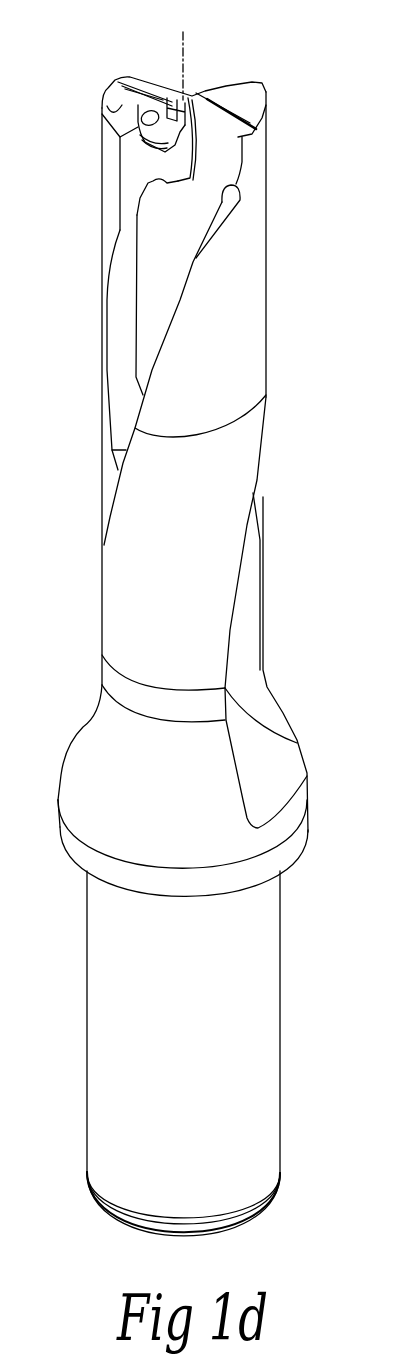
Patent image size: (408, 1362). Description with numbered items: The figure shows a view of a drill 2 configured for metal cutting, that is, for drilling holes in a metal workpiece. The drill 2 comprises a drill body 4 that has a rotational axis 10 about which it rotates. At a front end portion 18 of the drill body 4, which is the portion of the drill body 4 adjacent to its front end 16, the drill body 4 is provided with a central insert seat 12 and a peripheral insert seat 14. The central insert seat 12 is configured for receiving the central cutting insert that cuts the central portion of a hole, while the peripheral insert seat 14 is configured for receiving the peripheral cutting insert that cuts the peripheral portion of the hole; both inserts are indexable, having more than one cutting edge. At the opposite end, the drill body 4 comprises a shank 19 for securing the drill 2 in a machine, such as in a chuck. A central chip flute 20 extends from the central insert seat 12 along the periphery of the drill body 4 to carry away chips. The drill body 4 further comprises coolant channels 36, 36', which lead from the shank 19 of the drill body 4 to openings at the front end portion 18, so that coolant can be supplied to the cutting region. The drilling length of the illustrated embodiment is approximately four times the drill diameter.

The drill 2 is at (203, 618).
The drill body 4 is at (128, 559).
The rotational axis 10 is at (183, 50).
The central insert seat 12 is at (142, 160).
The peripheral insert seat 14 is at (231, 72).
The front end 16 is at (241, 115).
The front end portion 18 is at (299, 184).
The shank 19 is at (242, 1042).
The central chip flute 20 is at (116, 341).
The coolant channel 36 is at (257, 221).
The coolant channel 36' is at (74, 101).